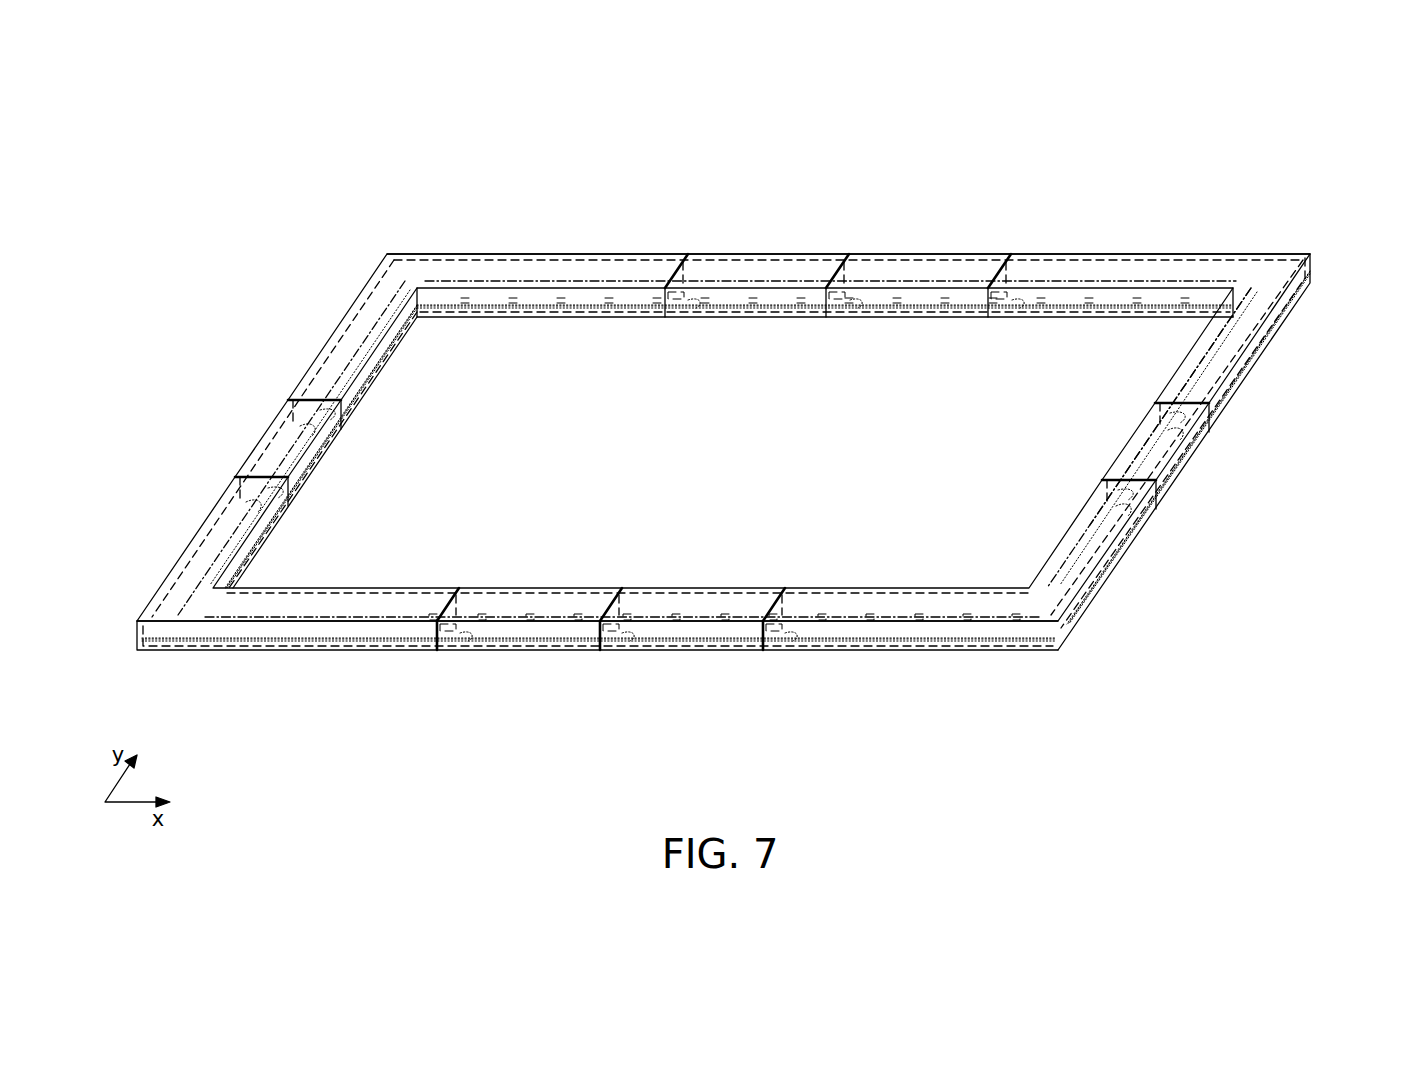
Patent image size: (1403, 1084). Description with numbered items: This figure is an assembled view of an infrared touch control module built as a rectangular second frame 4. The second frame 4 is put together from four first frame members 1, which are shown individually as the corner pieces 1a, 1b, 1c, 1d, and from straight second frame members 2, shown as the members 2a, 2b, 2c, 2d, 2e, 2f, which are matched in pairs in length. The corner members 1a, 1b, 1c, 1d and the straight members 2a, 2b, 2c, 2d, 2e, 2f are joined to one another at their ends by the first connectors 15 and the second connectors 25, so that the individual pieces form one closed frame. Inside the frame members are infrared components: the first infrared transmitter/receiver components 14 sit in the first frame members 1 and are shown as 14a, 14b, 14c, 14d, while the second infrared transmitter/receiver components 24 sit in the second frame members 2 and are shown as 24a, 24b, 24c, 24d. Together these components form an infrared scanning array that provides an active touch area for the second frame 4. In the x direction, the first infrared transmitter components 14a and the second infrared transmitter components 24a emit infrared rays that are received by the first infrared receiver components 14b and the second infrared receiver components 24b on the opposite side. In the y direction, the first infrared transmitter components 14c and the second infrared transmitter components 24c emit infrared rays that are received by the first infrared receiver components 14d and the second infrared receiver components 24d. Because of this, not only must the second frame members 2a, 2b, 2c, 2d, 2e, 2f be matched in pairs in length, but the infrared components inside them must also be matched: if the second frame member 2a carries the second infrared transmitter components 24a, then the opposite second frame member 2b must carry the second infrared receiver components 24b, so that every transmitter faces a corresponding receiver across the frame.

The second frame 4 is at (868, 163).
The first frame member 1 is at (1207, 611).
The first frame member 1a is at (467, 253).
The first frame member 1b is at (1222, 253).
The first frame member 1c is at (222, 651).
The first frame member 1d is at (970, 651).
The second frame member 2 is at (1168, 686).
The second frame member 2a is at (748, 253).
The second frame member 2b is at (533, 651).
The second frame member 2c is at (910, 253).
The second frame member 2d is at (695, 651).
The second frame member 2e is at (250, 439).
The second frame member 2f is at (1200, 458).
The first infrared transmitter/receiver component 14 is at (1185, 771).
The first infrared transmitter component 14a is at (557, 312).
The first infrared receiver component 14b is at (386, 612).
The first infrared transmitter component 14c is at (378, 372).
The first infrared receiver component 14d is at (1170, 393).
The second infrared transmitter/receiver component 24 is at (1185, 847).
The second infrared transmitter component 24a is at (752, 308).
The second infrared receiver component 24b is at (535, 613).
The second infrared transmitter component 24c is at (342, 432).
The second infrared receiver component 24d is at (1143, 428).
The first connector 15 is at (680, 262).
The second connector 25 is at (684, 262).